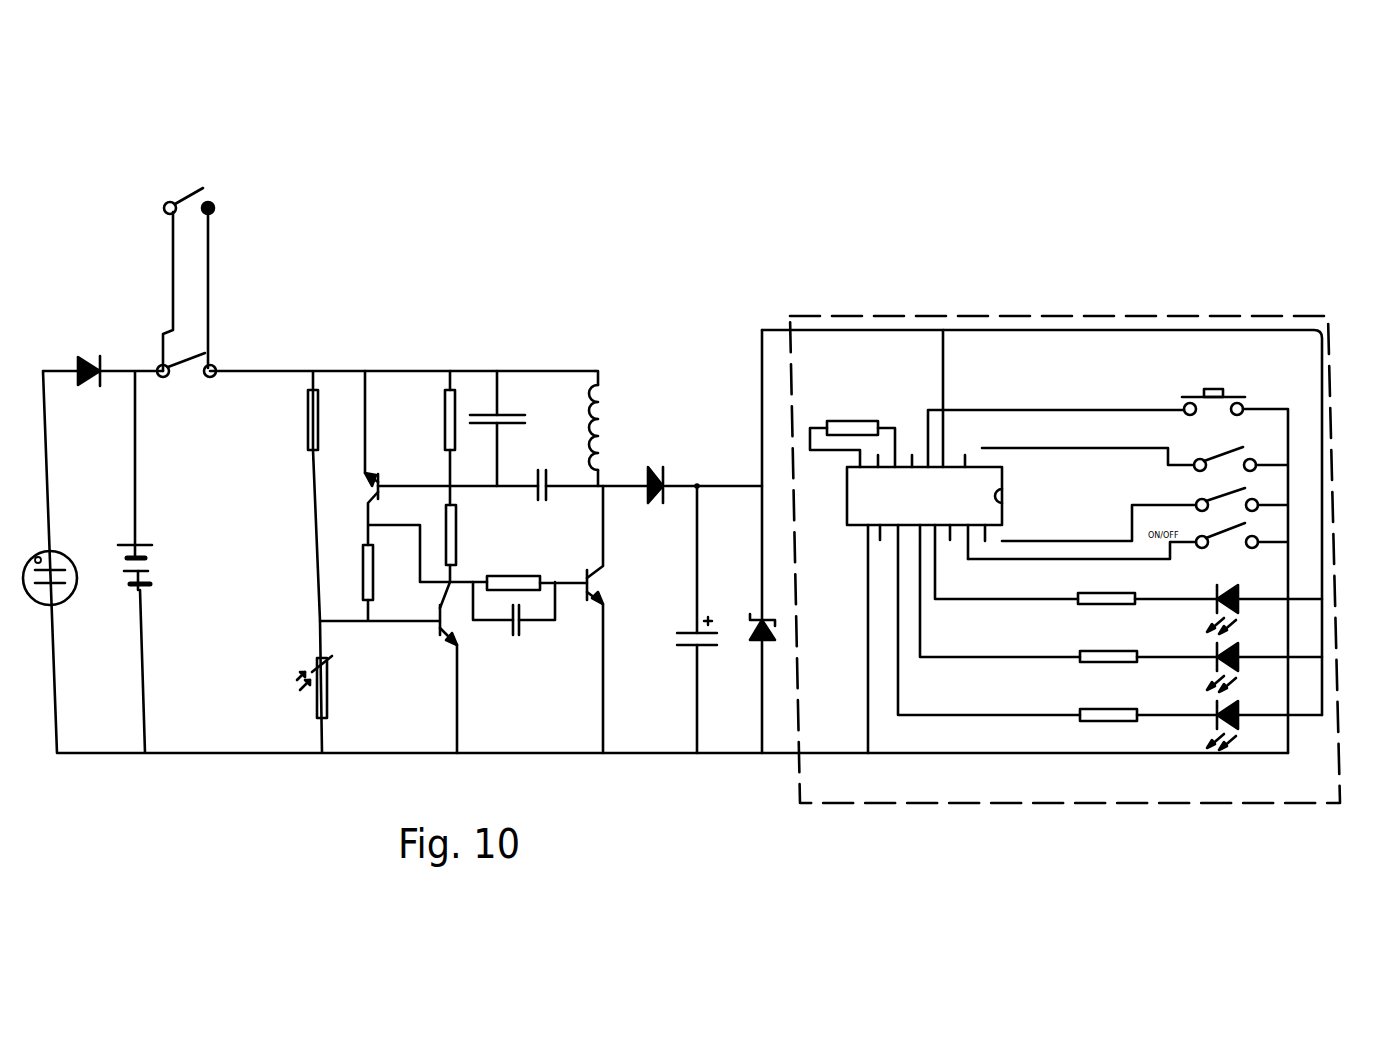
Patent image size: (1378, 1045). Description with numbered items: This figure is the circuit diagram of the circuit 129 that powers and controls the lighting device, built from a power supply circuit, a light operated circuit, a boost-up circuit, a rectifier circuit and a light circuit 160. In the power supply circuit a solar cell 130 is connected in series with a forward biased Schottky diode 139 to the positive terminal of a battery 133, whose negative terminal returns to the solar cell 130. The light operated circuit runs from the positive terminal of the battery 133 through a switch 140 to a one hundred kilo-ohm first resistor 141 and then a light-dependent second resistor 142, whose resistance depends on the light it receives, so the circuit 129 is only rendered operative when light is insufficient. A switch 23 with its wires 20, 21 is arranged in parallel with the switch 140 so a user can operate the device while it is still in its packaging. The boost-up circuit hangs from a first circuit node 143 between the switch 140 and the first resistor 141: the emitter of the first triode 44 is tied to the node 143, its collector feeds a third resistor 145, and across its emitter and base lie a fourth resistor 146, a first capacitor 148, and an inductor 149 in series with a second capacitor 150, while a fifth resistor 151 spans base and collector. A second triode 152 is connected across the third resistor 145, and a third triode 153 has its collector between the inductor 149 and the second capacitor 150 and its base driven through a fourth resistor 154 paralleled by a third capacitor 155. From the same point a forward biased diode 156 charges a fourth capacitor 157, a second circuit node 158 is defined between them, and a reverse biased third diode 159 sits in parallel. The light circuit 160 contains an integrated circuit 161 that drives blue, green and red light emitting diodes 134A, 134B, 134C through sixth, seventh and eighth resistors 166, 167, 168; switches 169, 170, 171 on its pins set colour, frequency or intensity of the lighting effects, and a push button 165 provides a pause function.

The wire 20 is at (173, 270).
The wire 21 is at (236, 208).
The switch 23 is at (216, 218).
The transistor Q3 44 is at (372, 490).
The circuit 129 is at (1048, 256).
The solar cell 130 is at (72, 556).
The battery 133 is at (160, 542).
The first light emitting diode 134A is at (1210, 594).
The second light emitting diode 134B is at (1208, 638).
The third light emitting diode 134C is at (1212, 708).
The forward biased diode 139 is at (102, 370).
The switch 140 is at (215, 368).
The first resistor 141 is at (312, 448).
The second light-dependent resistor 142 is at (320, 660).
The first circuit node 143 is at (316, 372).
The third resistor 145 is at (366, 575).
The fourth resistor 146 is at (462, 388).
The first capacitor 148 is at (498, 412).
The inductor 149 is at (600, 392).
The second capacitor 150 is at (548, 498).
The fifth resistor 151 is at (448, 530).
The second triode 152 is at (446, 628).
The third triode 153 is at (606, 598).
The fourth resistor 154 is at (530, 575).
The third capacitor 155 is at (522, 628).
The second diode 156 is at (650, 468).
The fourth capacitor 157 is at (694, 641).
The second circuit node 158 is at (698, 486).
The third diode 159 is at (770, 620).
The light circuit 160 is at (1130, 319).
The integrated circuit 161 is at (848, 528).
The push button 165 is at (1236, 398).
The sixth resistor 166 is at (1076, 592).
The seventh resistor 167 is at (1076, 652).
The eighth resistor 168 is at (1078, 710).
The switch 169 is at (1196, 468).
The switch 170 is at (1208, 505).
The switch 171 is at (848, 422).